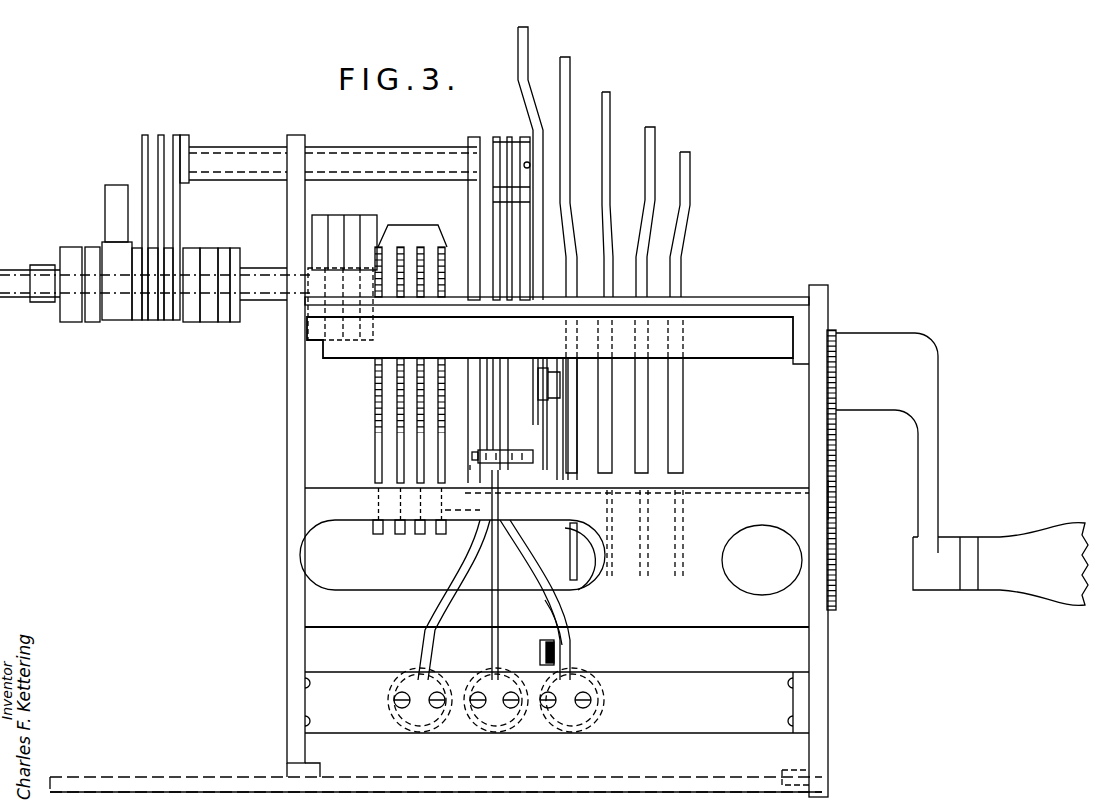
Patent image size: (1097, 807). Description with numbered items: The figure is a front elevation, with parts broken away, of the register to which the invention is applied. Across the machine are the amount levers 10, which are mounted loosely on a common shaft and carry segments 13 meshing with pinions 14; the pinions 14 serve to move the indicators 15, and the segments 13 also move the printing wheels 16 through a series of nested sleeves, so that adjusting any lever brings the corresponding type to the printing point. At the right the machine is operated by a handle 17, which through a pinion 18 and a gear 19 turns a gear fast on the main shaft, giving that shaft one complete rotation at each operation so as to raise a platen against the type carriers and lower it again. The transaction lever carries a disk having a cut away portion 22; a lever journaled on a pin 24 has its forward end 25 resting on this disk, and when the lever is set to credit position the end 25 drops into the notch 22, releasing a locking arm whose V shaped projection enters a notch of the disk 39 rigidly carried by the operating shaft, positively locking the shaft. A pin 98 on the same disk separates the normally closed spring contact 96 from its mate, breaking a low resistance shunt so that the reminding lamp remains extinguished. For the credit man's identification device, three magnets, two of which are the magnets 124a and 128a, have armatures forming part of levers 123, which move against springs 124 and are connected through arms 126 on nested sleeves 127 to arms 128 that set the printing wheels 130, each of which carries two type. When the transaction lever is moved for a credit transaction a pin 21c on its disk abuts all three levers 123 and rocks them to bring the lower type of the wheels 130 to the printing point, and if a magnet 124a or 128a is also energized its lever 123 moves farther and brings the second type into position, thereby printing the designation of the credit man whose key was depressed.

The amount levers 10 is at (690, 155).
The segments 13 is at (440, 412).
The pinions 14 is at (526, 50).
The indicators 15 is at (368, 216).
The printing wheels 16 is at (192, 322).
The handle 17 is at (962, 469).
The pinion 18 is at (838, 373).
The gear 19 is at (838, 497).
The pin 21c is at (483, 466).
The cut away portion 22 is at (532, 437).
The pin 24 is at (500, 570).
The forward end 25 is at (542, 373).
The disk 39 is at (565, 553).
The spring contact 96 is at (562, 600).
The pin 98 is at (578, 590).
The levers 123 is at (548, 396).
The springs 124 is at (428, 735).
The magnet 124a is at (575, 735).
The plates 126 is at (162, 214).
The nested sleeves 127 is at (258, 166).
The arms 128 is at (525, 215).
The magnet 128a is at (502, 735).
The printing wheels 130 is at (155, 337).